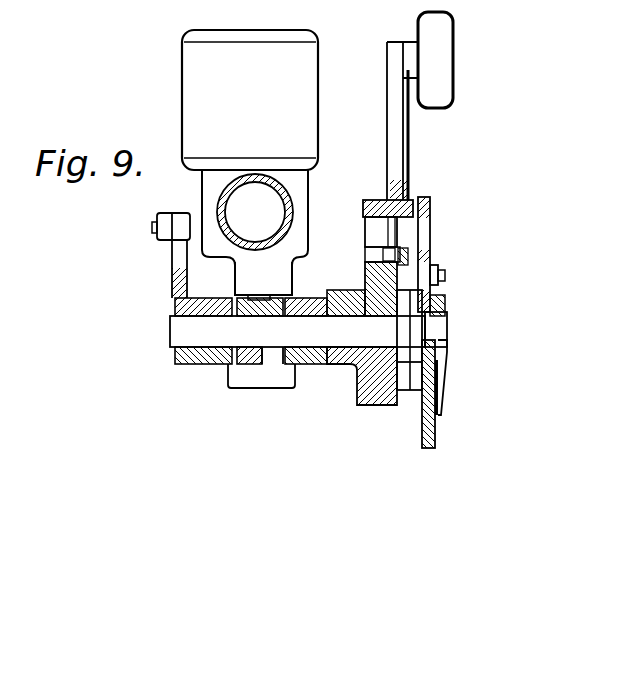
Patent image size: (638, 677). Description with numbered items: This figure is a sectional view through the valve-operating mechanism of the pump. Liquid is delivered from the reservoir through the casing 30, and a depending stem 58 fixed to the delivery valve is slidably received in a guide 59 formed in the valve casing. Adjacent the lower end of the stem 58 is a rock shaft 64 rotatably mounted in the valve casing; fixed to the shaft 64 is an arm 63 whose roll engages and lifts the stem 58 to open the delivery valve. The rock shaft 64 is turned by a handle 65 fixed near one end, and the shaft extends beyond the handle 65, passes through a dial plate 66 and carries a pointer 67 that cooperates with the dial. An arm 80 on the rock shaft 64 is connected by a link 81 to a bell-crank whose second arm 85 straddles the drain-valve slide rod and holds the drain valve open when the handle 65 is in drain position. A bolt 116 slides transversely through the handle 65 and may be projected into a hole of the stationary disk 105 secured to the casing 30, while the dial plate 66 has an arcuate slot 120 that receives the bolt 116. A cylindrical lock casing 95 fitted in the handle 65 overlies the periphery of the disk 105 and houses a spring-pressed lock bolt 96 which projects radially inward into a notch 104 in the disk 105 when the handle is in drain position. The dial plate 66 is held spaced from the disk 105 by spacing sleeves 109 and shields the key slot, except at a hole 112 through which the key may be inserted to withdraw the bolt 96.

The casing 30 is at (250, 100).
The stem 58 is at (257, 303).
The guide 59 is at (255, 265).
The arm 63 is at (262, 362).
The rock shaft 64 is at (193, 337).
The handle 65 is at (397, 113).
The dial plate 66 is at (433, 200).
The pointer 67 is at (440, 371).
The arm 80 is at (176, 273).
The link 81 is at (163, 240).
The second arm 85 is at (412, 350).
The lock casing 95 is at (400, 231).
The lock bolt 96 is at (366, 250).
The notch 104 is at (363, 264).
The disk 105 is at (375, 385).
The spacing sleeve 109 is at (418, 385).
The hole 112 is at (430, 241).
The bolt 116 is at (445, 276).
The arcuate slot 120 is at (432, 294).